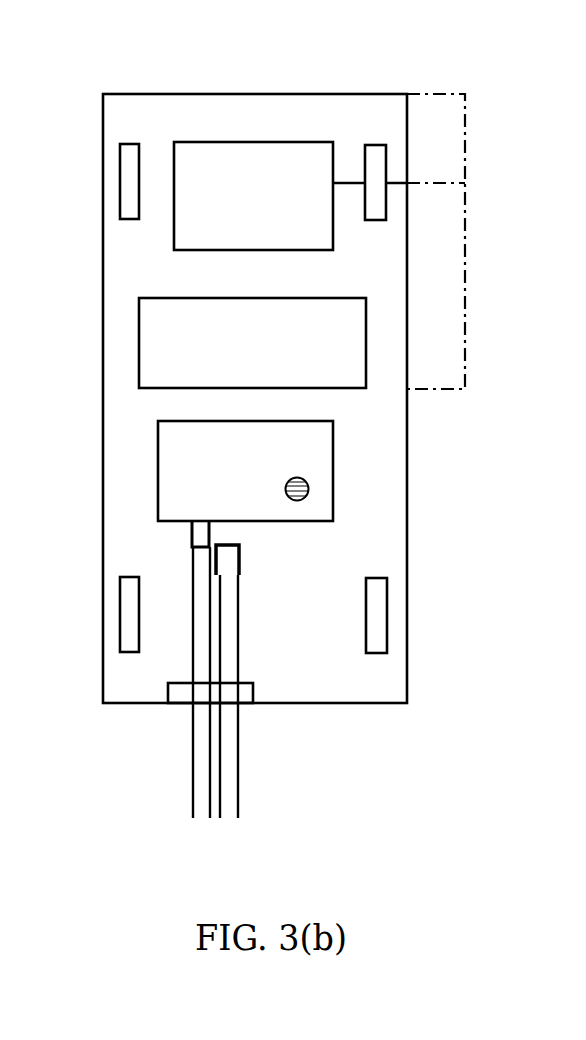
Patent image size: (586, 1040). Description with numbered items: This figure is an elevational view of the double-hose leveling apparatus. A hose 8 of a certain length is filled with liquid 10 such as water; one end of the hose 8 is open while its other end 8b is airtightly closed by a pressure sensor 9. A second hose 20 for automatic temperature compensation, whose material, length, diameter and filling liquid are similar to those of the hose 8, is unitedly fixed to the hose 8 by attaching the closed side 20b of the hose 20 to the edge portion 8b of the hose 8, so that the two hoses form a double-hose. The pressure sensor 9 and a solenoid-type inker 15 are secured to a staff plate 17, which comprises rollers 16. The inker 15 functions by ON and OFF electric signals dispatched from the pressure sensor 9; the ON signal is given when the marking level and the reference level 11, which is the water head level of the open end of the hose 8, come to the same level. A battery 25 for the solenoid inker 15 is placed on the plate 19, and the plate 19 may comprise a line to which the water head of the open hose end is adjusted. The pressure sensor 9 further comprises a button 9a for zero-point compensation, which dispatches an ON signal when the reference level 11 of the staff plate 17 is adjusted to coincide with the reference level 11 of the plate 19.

The hose 8 is at (167, 669).
The other end of hose 8b is at (193, 542).
The pressure sensor 9 is at (333, 508).
The button for zero-point compensation 9a is at (308, 487).
The liquid 10 is at (198, 658).
The reference level 11 is at (350, 182).
The solenoid-type inker 15 is at (273, 142).
The rollers 16 is at (120, 178).
The staff plate 17 is at (407, 438).
The plate 19 is at (413, 92).
The hose for automatic temperature compensation 20 is at (273, 681).
The closed side of hose 20b is at (242, 563).
The battery 25 is at (323, 388).